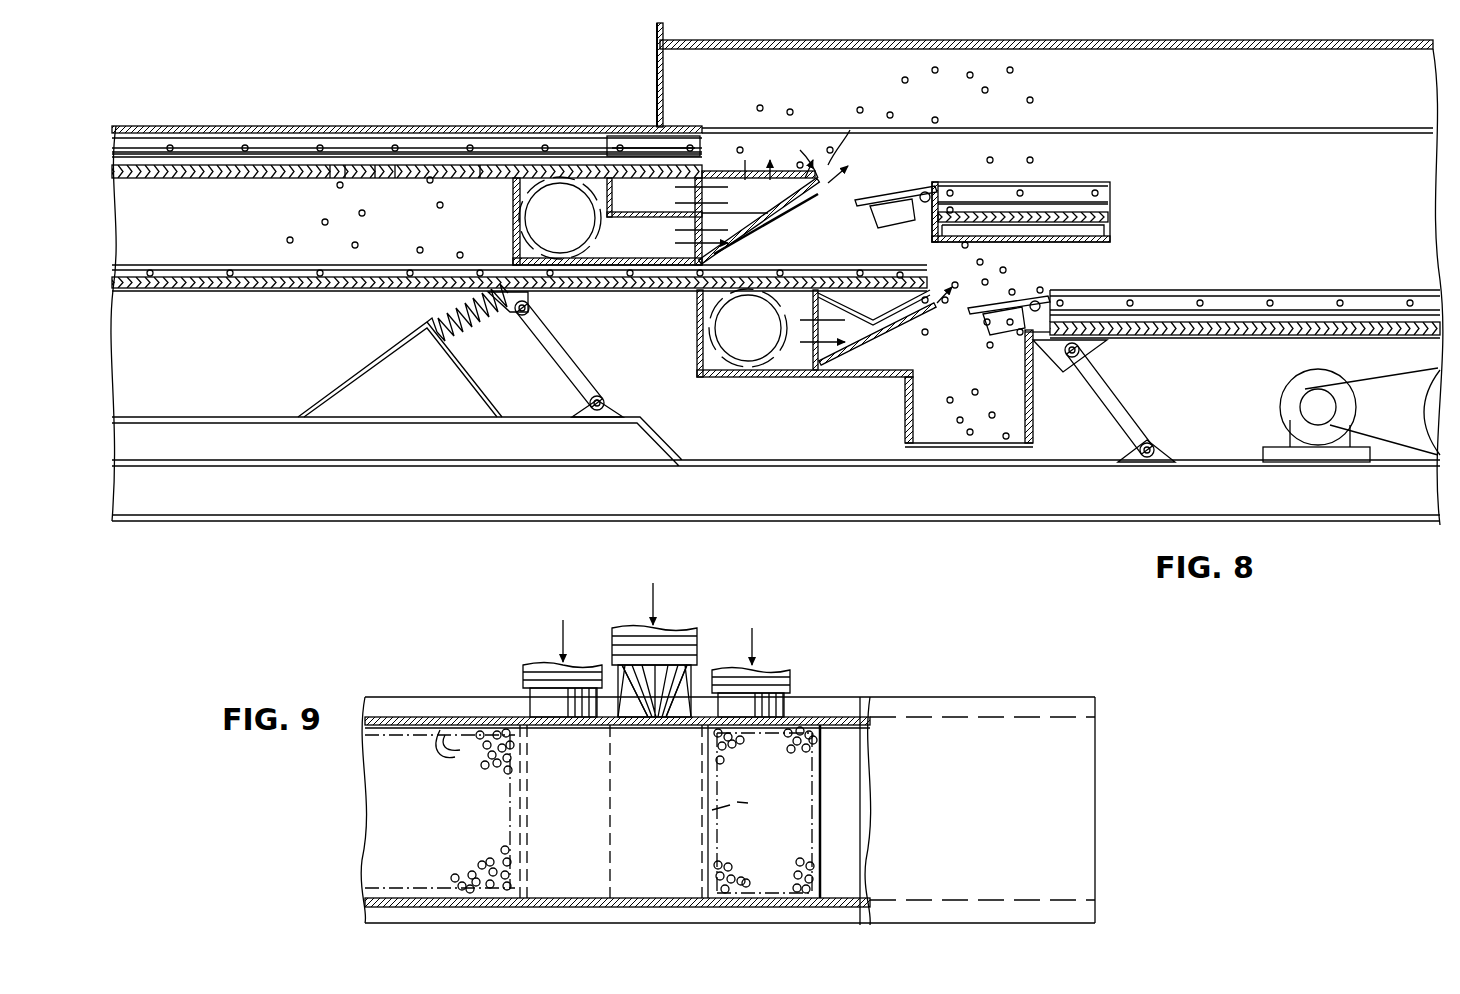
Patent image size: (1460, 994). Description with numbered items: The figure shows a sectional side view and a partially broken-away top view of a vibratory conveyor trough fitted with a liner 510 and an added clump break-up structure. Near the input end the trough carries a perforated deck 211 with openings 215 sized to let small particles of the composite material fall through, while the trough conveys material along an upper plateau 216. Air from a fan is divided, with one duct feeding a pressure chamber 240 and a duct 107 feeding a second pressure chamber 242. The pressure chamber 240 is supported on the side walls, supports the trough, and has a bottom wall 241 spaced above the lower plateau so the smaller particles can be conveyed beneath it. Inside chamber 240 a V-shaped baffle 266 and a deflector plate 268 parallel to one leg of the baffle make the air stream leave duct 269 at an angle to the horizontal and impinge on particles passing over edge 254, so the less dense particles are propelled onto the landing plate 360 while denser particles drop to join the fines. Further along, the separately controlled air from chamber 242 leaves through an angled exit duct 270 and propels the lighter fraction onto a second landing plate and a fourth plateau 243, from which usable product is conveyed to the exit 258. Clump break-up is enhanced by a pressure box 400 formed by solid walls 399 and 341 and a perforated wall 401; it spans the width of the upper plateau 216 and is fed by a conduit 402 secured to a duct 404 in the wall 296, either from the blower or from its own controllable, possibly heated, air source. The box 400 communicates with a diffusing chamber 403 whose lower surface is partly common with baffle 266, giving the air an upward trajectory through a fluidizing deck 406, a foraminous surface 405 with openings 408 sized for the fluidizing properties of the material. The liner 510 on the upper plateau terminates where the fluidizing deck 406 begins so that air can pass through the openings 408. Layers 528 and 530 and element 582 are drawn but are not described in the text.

In FIG. 8, the duct 107 is at (720, 330).
In FIG. 8, the perforated deck 211 is at (290, 165).
In FIG. 9, the perforated deck 211 is at (430, 800).
In FIG. 8, the openings 215 is at (332, 168).
In FIG. 9, the openings 215 is at (475, 735).
In FIG. 8, the upper plateau 216 is at (483, 160).
In FIG. 8, the pressure chamber 240 is at (515, 200).
In FIG. 9, the pressure chamber 240 is at (545, 700).
In FIG. 8, the bottom wall 241 is at (612, 293).
In FIG. 8, the pressure chamber 242 is at (760, 345).
In FIG. 9, the pressure chamber 242 is at (785, 695).
In FIG. 8, the fourth plateau 243 is at (1135, 322).
In FIG. 8, the edge 254 is at (850, 145).
In FIG. 9, the edge 254 is at (820, 760).
In FIG. 8, the exit 258 is at (1380, 315).
In FIG. 8, the V-shaped baffle 266 is at (777, 225).
In FIG. 8, the deflector plate 268 is at (702, 272).
In FIG. 8, the duct 269 is at (800, 205).
In FIG. 8, the angled exit duct 270 is at (890, 335).
In FIG. 8, the wall 296 is at (705, 185).
In FIG. 9, the wall 296 is at (480, 735).
In FIG. 8, the solid wall 341 is at (640, 212).
In FIG. 8, the landing plate 360 is at (920, 195).
In FIG. 8, the solid wall 399 is at (625, 185).
In FIG. 8, the pressure box 400 is at (660, 185).
In FIG. 8, the perforated wall 401 is at (715, 175).
In FIG. 9, the perforated wall 401 is at (730, 805).
In FIG. 8, the conduit 402 is at (655, 115).
In FIG. 9, the conduit 402 is at (655, 630).
In FIG. 8, the diffusing chamber 403 is at (810, 140).
In FIG. 9, the duct 404 is at (655, 705).
In FIG. 8, the foraminous surface 405 is at (825, 165).
In FIG. 8, the fluidizing deck 406 is at (790, 165).
In FIG. 9, the fluidizing deck 406 is at (795, 860).
In FIG. 8, the openings 408 is at (748, 168).
In FIG. 9, the openings 408 is at (790, 745).
In FIG. 8, the liner 510 is at (263, 168).
In FIG. 8, the belt layer 528 is at (188, 157).
In FIG. 8, the belt top layer 530 is at (160, 147).
In FIG. 8, the belt spacer 582 is at (396, 165).